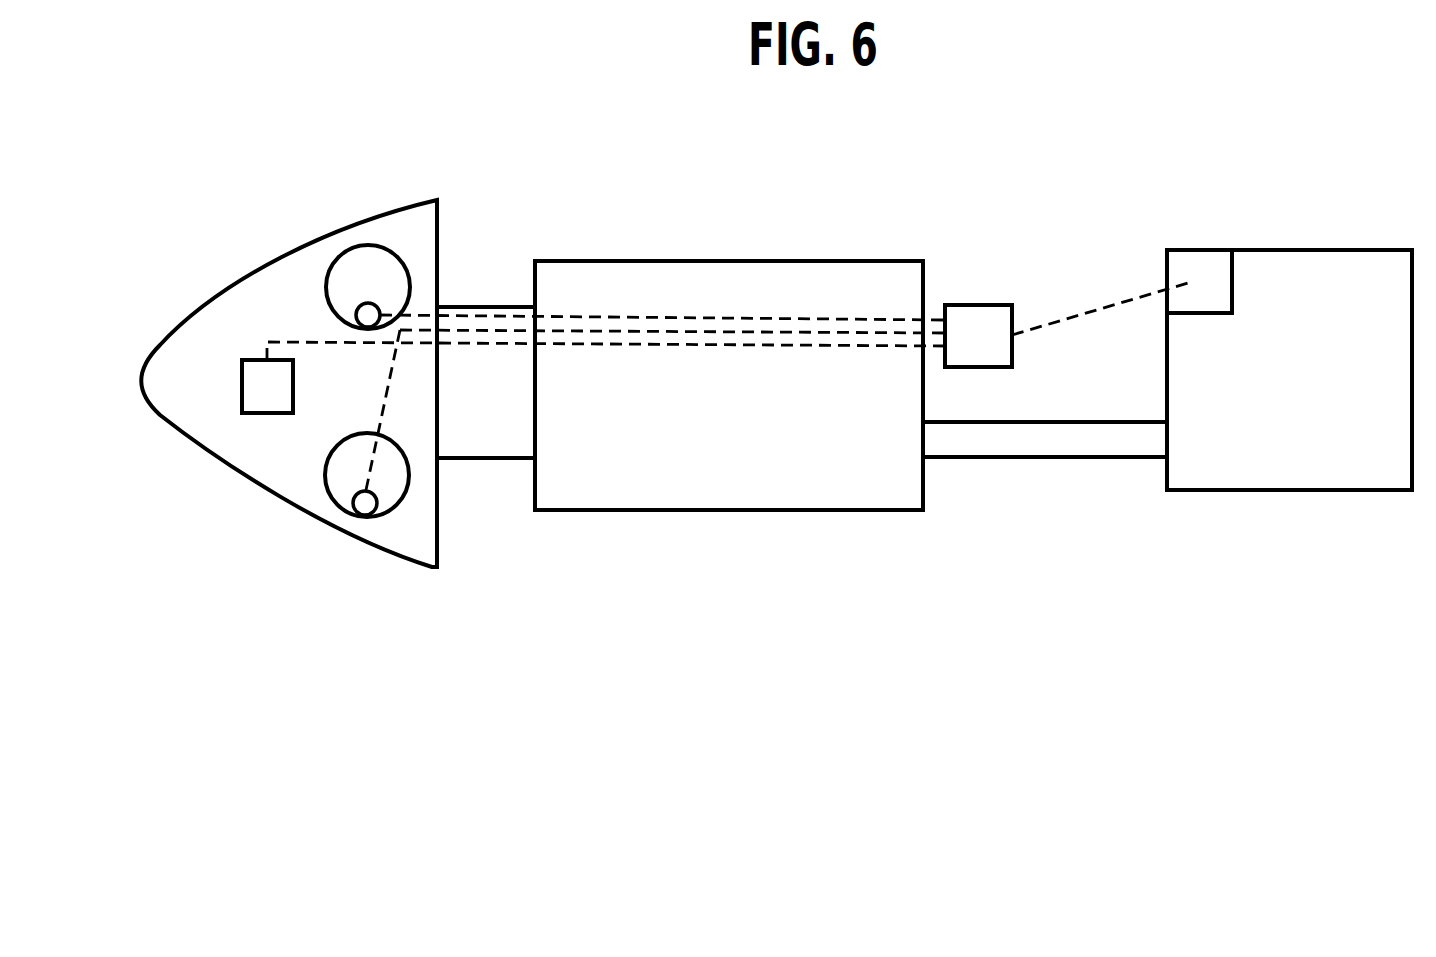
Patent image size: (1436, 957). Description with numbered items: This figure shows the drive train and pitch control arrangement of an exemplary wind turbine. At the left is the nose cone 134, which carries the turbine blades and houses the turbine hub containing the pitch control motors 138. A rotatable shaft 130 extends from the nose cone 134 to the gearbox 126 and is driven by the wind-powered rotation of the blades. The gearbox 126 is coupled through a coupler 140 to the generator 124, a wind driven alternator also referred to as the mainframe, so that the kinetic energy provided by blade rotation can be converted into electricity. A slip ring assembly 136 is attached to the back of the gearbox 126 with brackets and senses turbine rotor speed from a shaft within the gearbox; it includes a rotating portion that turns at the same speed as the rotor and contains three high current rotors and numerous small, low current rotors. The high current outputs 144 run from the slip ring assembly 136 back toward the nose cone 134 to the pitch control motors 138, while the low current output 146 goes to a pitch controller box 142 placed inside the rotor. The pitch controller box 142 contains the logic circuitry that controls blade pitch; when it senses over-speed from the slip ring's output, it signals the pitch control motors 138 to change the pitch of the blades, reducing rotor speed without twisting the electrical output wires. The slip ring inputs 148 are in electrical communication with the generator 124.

The generator 124 is at (1242, 491).
The gearbox 126 is at (792, 511).
The rotatable shaft 130 is at (505, 459).
The nose cone 134 is at (243, 477).
The slip ring assembly 136 is at (978, 305).
The pitch control motors 138 is at (357, 248).
The coupler 140 is at (1108, 458).
The pitch controller box 142 is at (242, 386).
The high current outputs 144 is at (668, 318).
The low current output 146 is at (282, 340).
The slip ring inputs 148 is at (1107, 306).